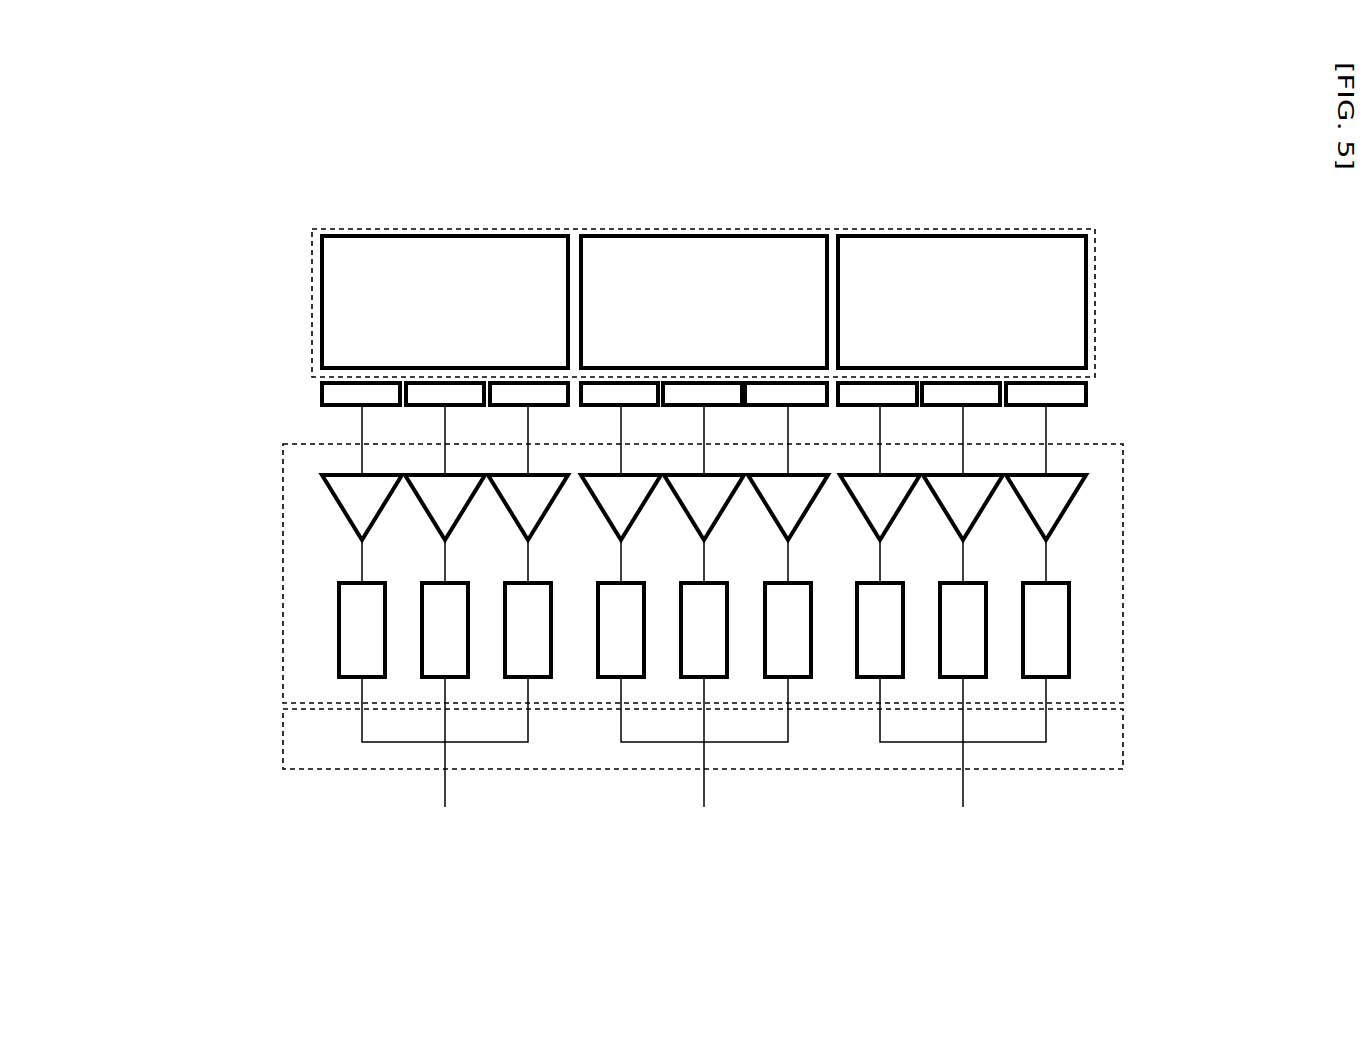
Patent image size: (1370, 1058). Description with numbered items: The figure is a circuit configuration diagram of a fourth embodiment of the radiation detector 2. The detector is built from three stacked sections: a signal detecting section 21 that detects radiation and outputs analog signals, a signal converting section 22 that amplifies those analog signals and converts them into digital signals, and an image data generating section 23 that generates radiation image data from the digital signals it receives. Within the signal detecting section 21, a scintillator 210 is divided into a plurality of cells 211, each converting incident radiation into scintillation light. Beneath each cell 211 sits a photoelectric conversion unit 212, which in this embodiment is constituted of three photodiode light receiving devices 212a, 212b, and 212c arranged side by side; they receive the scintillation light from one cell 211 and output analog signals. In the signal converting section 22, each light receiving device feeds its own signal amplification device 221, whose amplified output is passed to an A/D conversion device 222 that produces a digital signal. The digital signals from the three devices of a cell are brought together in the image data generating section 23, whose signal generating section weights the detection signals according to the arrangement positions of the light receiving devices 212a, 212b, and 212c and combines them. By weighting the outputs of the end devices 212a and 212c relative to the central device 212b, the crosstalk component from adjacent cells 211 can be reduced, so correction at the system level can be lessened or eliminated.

The radiation detector 2 is at (1143, 262).
The signal detecting section 21 is at (200, 255).
The scintillator 210 is at (312, 295).
The cell 211 is at (472, 313).
The photoelectric conversion unit 212 is at (322, 395).
The light receiving device 212a is at (335, 405).
The light receiving device 212b is at (437, 416).
The light receiving device 212c is at (520, 416).
The signal converting section 22 is at (281, 520).
The signal amplification device 221 is at (1076, 498).
The A/D conversion device 222 is at (1071, 613).
The image data generating section 23 is at (280, 728).